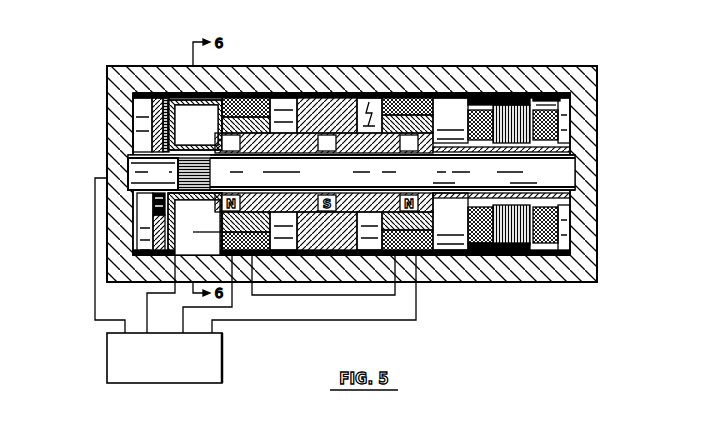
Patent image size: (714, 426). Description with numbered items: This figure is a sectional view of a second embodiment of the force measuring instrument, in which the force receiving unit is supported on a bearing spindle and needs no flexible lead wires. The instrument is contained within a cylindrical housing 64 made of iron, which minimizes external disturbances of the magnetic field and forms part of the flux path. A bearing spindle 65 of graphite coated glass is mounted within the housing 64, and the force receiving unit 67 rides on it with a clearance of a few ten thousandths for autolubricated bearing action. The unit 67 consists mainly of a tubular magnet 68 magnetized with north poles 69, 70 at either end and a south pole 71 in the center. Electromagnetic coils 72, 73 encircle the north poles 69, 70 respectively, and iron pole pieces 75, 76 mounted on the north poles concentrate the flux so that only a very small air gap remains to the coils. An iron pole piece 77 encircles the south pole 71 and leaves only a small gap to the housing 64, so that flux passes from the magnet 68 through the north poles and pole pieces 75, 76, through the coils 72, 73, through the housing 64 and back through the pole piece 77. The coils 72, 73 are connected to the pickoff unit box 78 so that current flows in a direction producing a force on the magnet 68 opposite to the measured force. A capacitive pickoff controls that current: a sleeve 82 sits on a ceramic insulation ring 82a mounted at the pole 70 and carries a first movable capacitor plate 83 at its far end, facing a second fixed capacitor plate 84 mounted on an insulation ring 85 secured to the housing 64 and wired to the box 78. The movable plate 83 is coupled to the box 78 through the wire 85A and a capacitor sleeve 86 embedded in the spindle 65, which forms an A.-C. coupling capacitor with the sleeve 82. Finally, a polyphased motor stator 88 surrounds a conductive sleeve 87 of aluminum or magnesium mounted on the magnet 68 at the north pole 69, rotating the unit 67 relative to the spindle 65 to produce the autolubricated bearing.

The housing 64 is at (514, 78).
The bearing spindle 65 is at (351, 172).
The force receiving unit 67 is at (380, 94).
The tubular magnet 68 is at (281, 140).
The north pole 69 is at (406, 152).
The north pole 70 is at (265, 172).
The south pole 71 is at (360, 172).
The electromagnetic coil 72 is at (418, 94).
The electromagnetic coil 73 is at (246, 103).
The iron pole piece 75 is at (433, 134).
The iron pole piece 76 is at (222, 124).
The iron pole piece 77 is at (342, 98).
The pickoff unit box 78 is at (224, 351).
The sleeve 82 is at (208, 147).
The ceramic insulation ring 82a is at (216, 206).
The first movable capacitor plate 83 is at (176, 241).
The second fixed capacitor plate 84 is at (155, 136).
The insulation ring 85 is at (160, 96).
The wire 85A is at (95, 222).
The capacitor sleeve 86 is at (169, 174).
The conductive sleeve 87 is at (563, 214).
The polyphased motor stator 88 is at (567, 96).